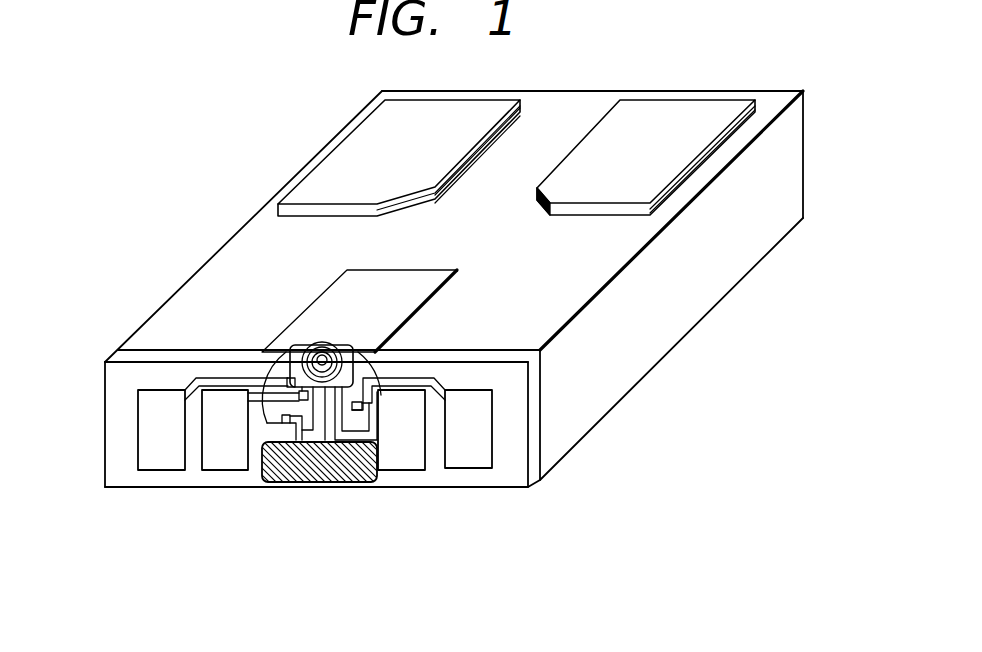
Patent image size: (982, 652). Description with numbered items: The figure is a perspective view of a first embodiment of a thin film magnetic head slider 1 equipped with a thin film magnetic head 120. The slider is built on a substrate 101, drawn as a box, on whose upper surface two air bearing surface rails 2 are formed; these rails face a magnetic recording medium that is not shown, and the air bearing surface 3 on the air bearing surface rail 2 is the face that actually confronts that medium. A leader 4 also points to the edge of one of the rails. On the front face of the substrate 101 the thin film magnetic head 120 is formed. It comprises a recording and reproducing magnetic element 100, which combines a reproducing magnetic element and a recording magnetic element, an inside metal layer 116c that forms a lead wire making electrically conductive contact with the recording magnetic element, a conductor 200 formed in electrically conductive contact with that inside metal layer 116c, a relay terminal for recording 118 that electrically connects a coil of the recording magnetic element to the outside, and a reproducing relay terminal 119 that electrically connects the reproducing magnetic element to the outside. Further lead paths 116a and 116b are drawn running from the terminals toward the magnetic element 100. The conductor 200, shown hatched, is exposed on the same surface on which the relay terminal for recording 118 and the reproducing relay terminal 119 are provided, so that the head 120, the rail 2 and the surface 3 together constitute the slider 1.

The thin film magnetic head slider 1 is at (257, 107).
The air bearing surface rail 2 is at (677, 112).
The air bearing surface 3 is at (223, 259).
The electrode edge portion 4 is at (617, 210).
The substrate 101 is at (763, 237).
The connection lead 116a is at (217, 375).
The connection lead 116b is at (405, 383).
The inside metal layer 116c is at (343, 440).
The relay terminal for recording 118 is at (228, 453).
The reproducing relay terminal 119 is at (405, 457).
The recording and reproducing magnetic element 100 is at (276, 416).
The conductor 200 is at (363, 472).
The thin film magnetic head 120 is at (535, 482).